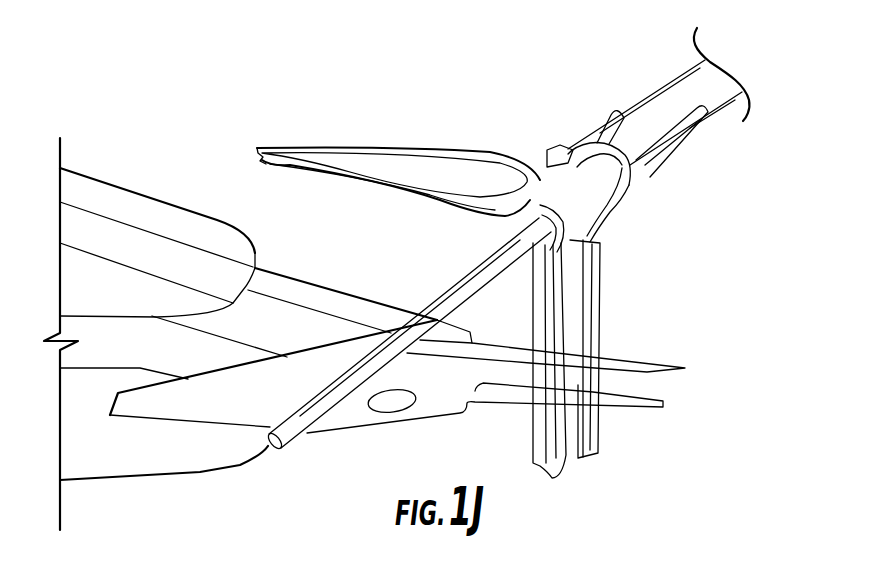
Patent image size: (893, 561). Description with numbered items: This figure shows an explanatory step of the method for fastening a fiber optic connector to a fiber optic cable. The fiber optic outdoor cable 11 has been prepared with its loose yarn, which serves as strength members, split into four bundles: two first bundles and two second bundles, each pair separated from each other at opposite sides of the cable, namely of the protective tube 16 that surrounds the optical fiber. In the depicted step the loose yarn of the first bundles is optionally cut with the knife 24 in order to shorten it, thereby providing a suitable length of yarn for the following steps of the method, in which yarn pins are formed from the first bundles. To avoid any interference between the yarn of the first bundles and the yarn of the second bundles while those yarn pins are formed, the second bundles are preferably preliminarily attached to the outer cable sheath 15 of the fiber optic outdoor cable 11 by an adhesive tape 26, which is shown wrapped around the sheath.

The fiber optic outdoor cable 11 is at (639, 33).
The outer cable sheath 15 is at (661, 87).
The protective tube 16 is at (408, 334).
The adhesive tape 26 is at (607, 198).
The knife 24 is at (353, 341).